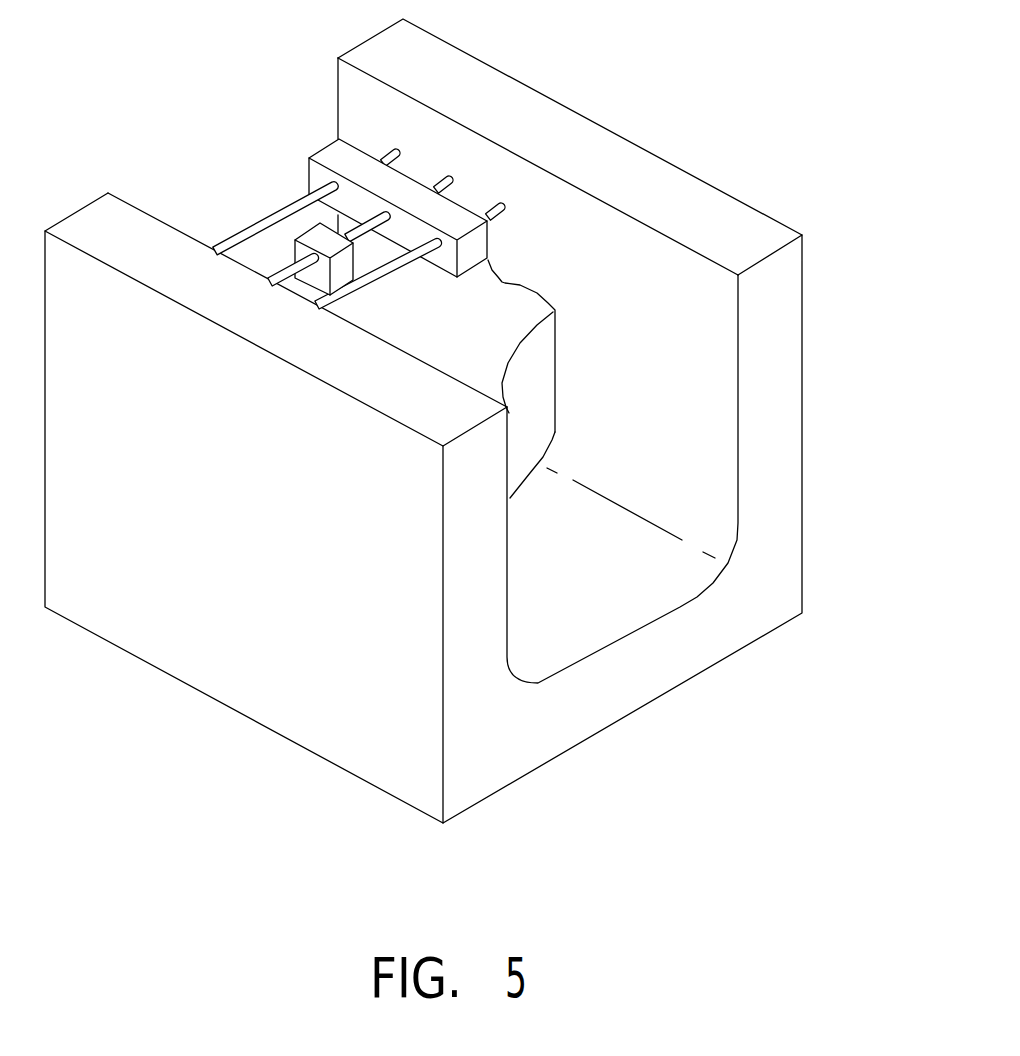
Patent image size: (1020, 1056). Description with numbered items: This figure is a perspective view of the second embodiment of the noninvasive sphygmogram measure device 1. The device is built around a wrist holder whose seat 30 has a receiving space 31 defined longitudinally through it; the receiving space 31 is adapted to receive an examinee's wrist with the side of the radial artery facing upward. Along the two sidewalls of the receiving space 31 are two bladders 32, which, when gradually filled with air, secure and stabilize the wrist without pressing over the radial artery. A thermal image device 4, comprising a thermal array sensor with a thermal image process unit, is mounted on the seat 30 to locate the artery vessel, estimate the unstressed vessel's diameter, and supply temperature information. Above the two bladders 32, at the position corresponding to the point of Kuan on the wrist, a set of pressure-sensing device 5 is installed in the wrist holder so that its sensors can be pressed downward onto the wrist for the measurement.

The fixture block assembly 1 is at (458, 421).
The thermal image device 4 is at (357, 163).
The pressure-sensing device 5 is at (290, 285).
The seat 30 is at (763, 415).
The receiving space 31 is at (565, 545).
The bladders 32 is at (540, 365).